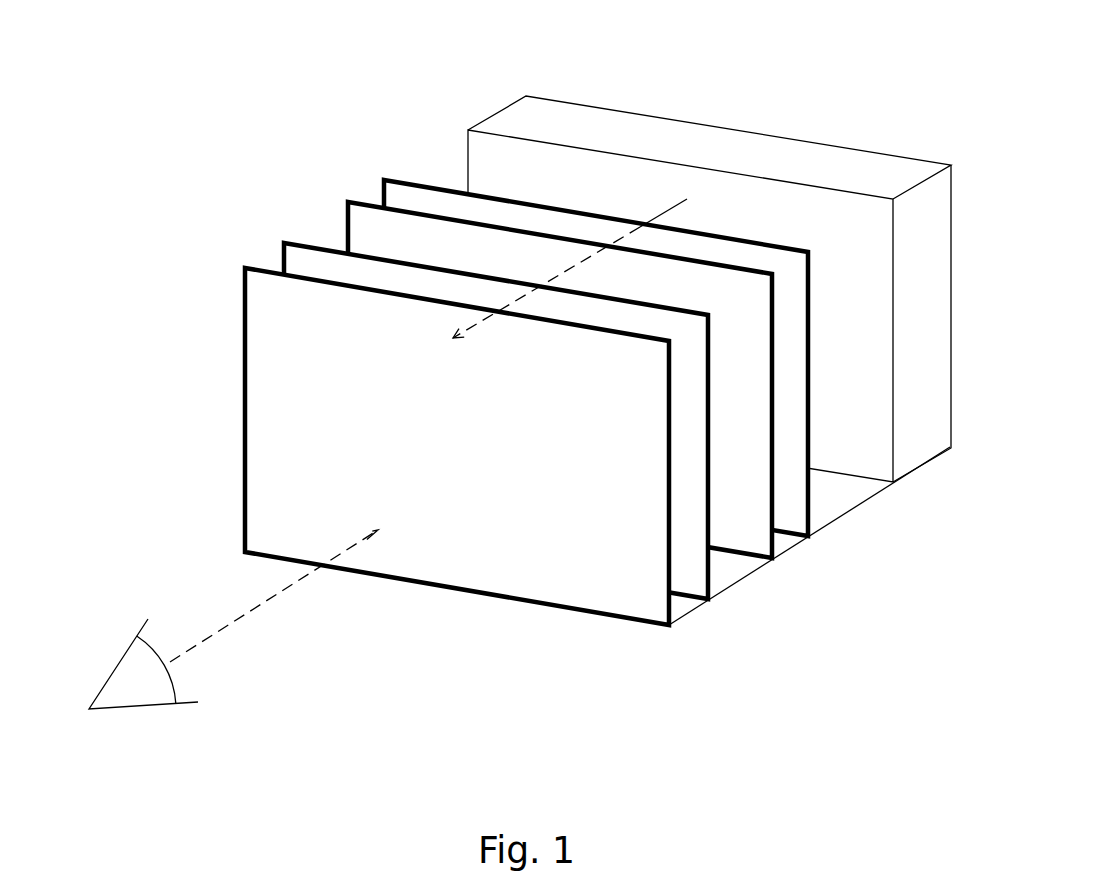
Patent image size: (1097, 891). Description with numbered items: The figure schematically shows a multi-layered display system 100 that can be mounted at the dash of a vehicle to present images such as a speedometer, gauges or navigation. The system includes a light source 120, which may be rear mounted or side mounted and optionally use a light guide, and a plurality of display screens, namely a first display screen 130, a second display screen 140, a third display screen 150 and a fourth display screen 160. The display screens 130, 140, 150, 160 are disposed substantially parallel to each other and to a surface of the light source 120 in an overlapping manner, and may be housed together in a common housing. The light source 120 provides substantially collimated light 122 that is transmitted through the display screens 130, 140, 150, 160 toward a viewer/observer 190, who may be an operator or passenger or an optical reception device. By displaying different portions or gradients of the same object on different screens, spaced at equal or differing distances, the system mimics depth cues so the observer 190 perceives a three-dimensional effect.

The multi-layered display system 100 is at (304, 24).
The light source 120 is at (881, 167).
The substantially collimated light 122 is at (658, 213).
The first display screen 130 is at (263, 322).
The second display screen 140 is at (293, 262).
The third display screen 150 is at (369, 217).
The fourth display screen 160 is at (438, 210).
The viewer/observer 190 is at (125, 653).